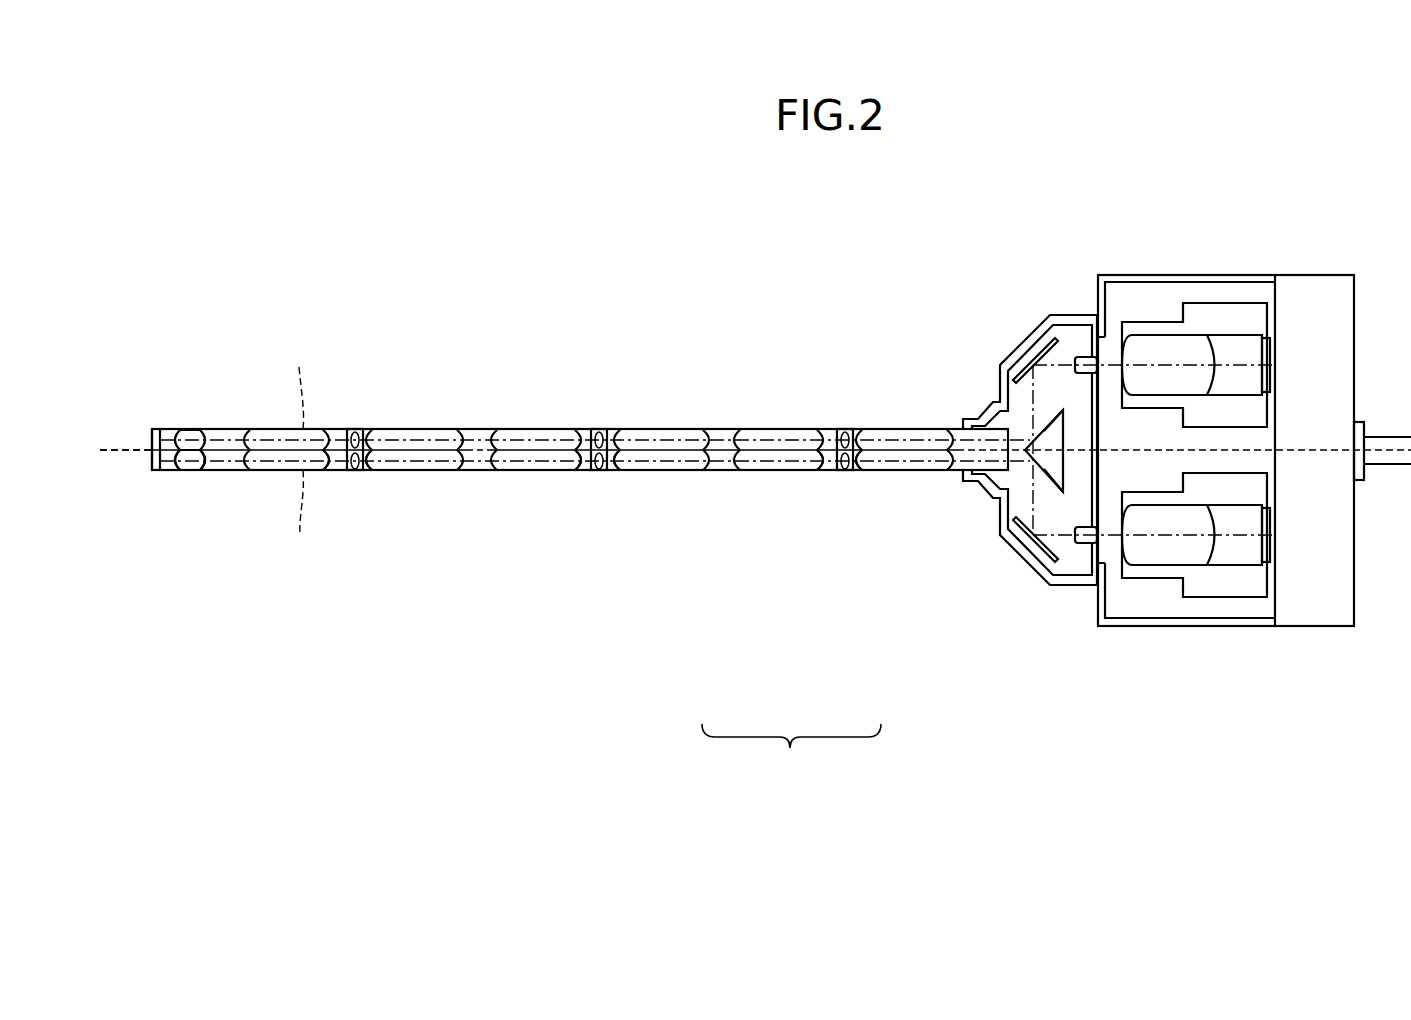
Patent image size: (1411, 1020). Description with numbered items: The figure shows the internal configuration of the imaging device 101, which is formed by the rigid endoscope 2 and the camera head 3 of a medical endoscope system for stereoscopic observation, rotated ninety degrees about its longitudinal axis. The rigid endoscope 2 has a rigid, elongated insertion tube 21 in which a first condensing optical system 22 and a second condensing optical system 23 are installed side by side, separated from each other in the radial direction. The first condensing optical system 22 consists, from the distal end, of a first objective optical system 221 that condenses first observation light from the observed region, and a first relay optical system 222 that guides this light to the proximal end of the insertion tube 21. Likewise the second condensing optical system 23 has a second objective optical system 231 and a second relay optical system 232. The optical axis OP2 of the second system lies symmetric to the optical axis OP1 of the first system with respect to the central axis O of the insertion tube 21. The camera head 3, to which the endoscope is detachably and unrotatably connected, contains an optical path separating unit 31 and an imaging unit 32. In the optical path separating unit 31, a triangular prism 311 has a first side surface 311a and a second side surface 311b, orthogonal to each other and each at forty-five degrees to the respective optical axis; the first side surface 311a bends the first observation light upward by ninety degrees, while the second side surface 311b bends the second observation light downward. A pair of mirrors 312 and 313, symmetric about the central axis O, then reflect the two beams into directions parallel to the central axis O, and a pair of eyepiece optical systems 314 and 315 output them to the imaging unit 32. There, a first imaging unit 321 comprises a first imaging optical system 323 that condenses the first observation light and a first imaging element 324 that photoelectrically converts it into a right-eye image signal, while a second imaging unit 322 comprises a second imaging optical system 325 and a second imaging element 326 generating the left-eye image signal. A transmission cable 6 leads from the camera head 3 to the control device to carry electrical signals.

The imaging device 101 is at (753, 486).
The rigid endoscope 2 is at (591, 550).
The camera head 3 is at (1106, 459).
The insertion tube 21 is at (157, 428).
The first condensing optical system 22 is at (525, 422).
The second condensing optical system 23 is at (525, 490).
The first objective optical system 221 is at (192, 428).
The first relay optical system 222 is at (372, 430).
The second objective optical system 231 is at (192, 472).
The second relay optical system 232 is at (372, 470).
The optical path separating unit 31 is at (1117, 453).
The triangular prism 311 is at (1097, 452).
The first side surface 311a is at (1052, 418).
The second side surface 311b is at (1052, 483).
The mirror 312 is at (1048, 342).
The mirror 313 is at (1040, 574).
The eyepiece optical system 314 is at (1085, 356).
The eyepiece optical system 315 is at (1087, 556).
The imaging unit 32 is at (1226, 439).
The first imaging unit 321 is at (1262, 318).
The second imaging unit 322 is at (1262, 488).
The first imaging optical system 323 is at (1155, 345).
The first imaging element 324 is at (1270, 345).
The second imaging optical system 325 is at (1168, 557).
The second imaging element 326 is at (1270, 548).
The transmission cable 6 is at (1395, 436).
The central axis O is at (105, 447).
The optical axis OP1 is at (301, 387).
The optical axis OP2 is at (301, 513).